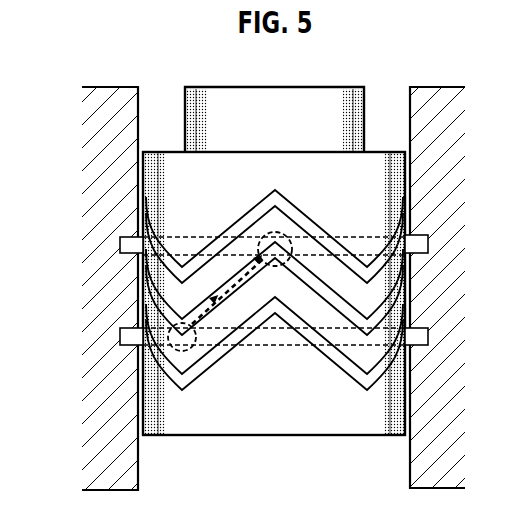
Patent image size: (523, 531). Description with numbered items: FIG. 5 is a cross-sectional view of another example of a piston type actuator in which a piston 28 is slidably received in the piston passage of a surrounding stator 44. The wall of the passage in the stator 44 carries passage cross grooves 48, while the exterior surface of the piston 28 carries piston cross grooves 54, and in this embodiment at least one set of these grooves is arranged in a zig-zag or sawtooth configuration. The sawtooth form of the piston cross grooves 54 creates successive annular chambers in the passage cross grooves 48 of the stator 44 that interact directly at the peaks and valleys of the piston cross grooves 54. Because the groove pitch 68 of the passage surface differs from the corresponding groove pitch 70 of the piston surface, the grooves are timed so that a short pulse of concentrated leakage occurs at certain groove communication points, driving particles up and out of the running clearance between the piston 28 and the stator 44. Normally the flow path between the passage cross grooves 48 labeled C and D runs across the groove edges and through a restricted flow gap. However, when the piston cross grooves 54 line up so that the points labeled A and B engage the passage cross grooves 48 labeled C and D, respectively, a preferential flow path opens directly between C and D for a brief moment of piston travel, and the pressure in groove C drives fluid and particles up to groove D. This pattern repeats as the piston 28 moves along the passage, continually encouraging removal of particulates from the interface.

The piston 28 is at (250, 86).
The stator 44 is at (451, 143).
The passage cross grooves 48 is at (120, 337).
The piston cross grooves 54 is at (333, 308).
The groove pitch 68 is at (352, 236).
The groove pitch 70 is at (233, 225).
The point A is at (183, 352).
The point B is at (274, 232).
The passage cross groove C is at (296, 339).
The passage cross groove D is at (296, 248).